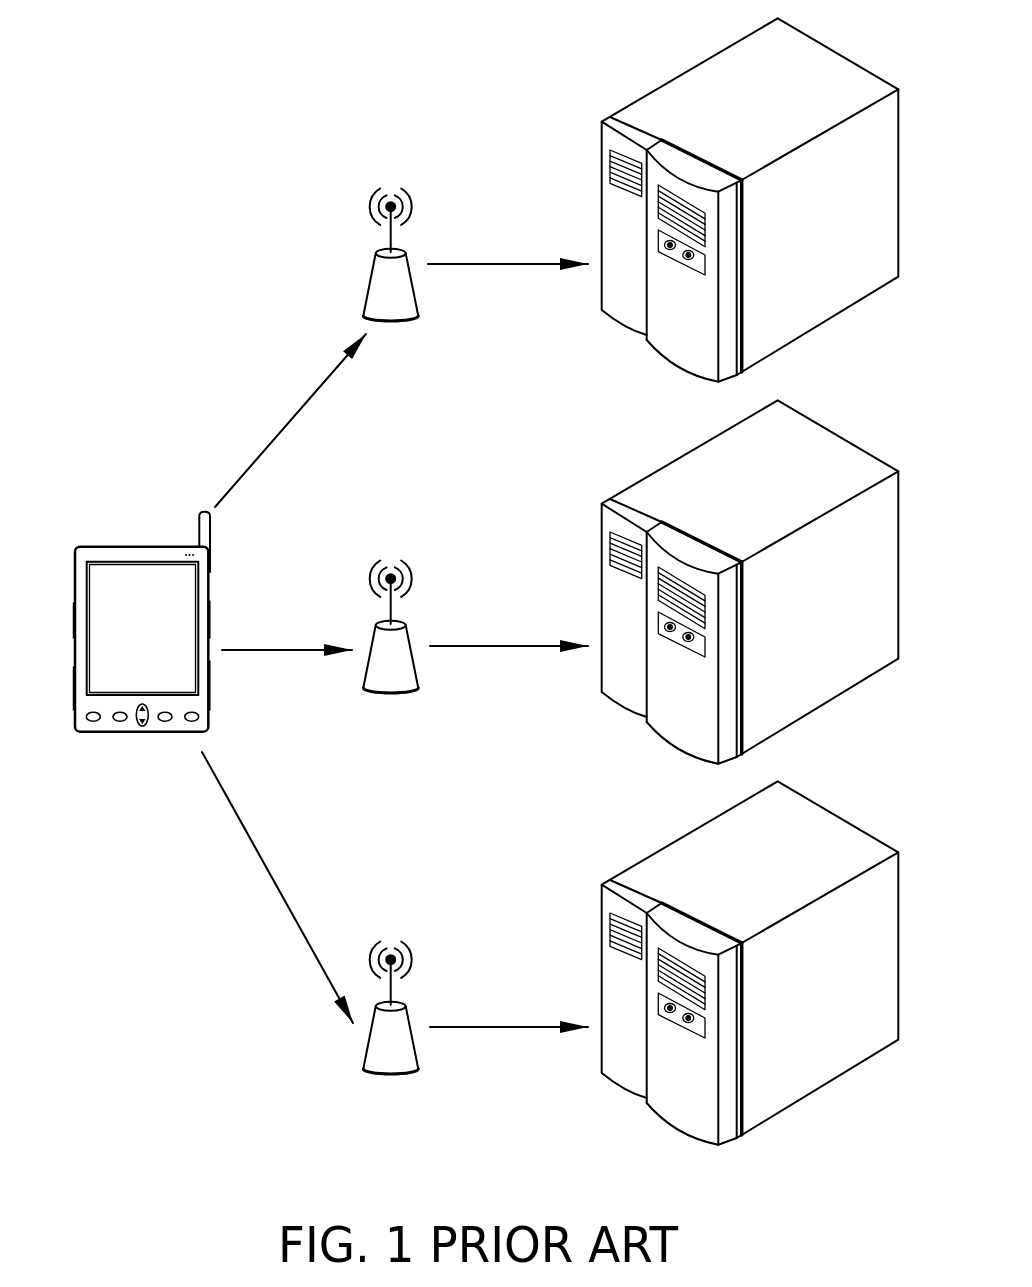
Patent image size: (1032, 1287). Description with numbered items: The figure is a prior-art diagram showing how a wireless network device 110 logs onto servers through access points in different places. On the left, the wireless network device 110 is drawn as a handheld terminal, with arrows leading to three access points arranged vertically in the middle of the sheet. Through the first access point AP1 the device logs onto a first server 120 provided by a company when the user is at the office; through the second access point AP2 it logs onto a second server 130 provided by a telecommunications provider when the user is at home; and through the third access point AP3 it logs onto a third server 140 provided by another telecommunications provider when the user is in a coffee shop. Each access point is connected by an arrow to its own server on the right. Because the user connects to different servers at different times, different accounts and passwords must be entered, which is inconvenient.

The wireless network device 110 is at (122, 547).
The first server 120 is at (803, 52).
The second server 130 is at (803, 434).
The third server 140 is at (803, 815).
The first access point AP1 is at (395, 312).
The second access point AP2 is at (395, 684).
The third access point AP3 is at (395, 1065).